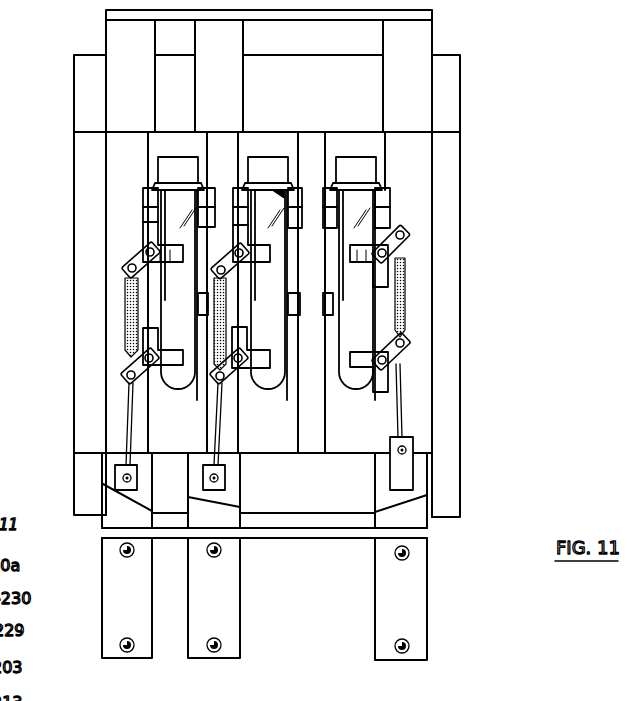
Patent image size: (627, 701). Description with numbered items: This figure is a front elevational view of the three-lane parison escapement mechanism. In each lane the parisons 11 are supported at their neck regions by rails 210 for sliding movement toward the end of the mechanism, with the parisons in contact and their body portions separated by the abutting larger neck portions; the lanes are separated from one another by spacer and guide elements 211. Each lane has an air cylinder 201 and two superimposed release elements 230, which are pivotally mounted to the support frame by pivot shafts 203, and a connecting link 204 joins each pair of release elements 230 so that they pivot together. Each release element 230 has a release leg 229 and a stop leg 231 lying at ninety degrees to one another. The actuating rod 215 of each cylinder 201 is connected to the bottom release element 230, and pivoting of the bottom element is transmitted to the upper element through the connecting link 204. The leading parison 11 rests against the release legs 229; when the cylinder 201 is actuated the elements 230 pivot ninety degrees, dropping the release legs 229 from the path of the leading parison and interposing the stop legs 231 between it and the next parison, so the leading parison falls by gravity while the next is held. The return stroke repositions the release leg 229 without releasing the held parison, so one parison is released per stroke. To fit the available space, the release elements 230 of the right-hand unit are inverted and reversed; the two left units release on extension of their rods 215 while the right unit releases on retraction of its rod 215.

The parison 11 is at (169, 390).
The air cylinder 201 is at (108, 621).
The pivot shaft 203 is at (143, 247).
The connecting link 204 is at (128, 305).
The rail 210 is at (143, 200).
The spacer and guide element 211 is at (201, 318).
The actuating rod 215 is at (126, 418).
The release leg 229 is at (167, 262).
The release element 230 is at (138, 262).
The stop leg 231 is at (143, 222).